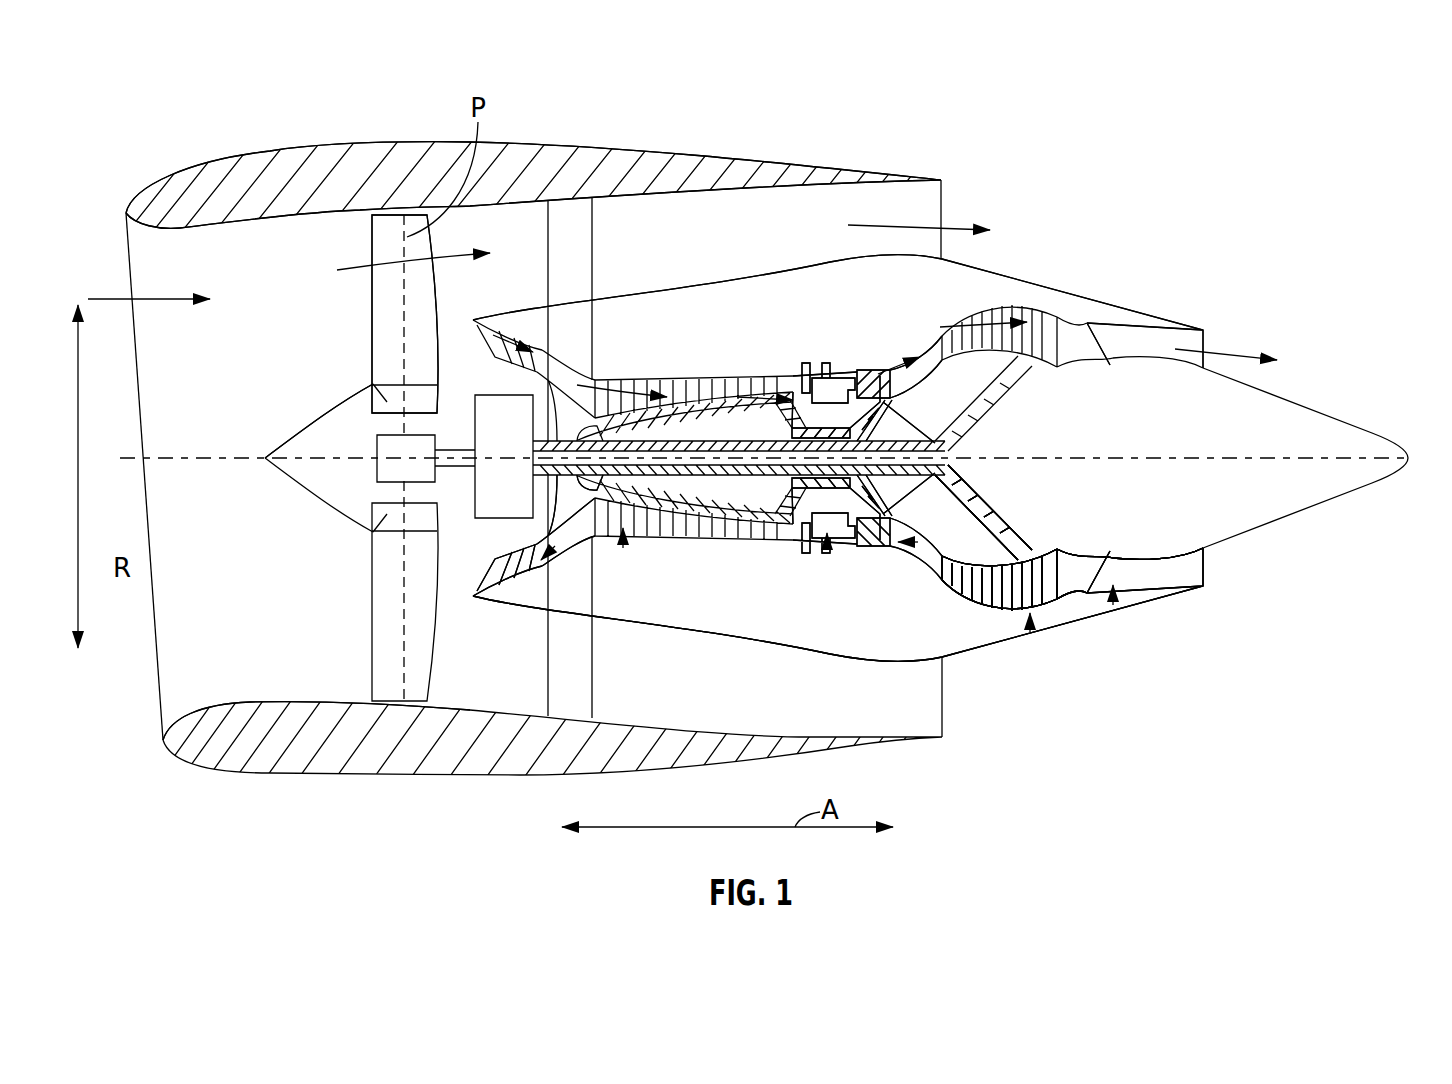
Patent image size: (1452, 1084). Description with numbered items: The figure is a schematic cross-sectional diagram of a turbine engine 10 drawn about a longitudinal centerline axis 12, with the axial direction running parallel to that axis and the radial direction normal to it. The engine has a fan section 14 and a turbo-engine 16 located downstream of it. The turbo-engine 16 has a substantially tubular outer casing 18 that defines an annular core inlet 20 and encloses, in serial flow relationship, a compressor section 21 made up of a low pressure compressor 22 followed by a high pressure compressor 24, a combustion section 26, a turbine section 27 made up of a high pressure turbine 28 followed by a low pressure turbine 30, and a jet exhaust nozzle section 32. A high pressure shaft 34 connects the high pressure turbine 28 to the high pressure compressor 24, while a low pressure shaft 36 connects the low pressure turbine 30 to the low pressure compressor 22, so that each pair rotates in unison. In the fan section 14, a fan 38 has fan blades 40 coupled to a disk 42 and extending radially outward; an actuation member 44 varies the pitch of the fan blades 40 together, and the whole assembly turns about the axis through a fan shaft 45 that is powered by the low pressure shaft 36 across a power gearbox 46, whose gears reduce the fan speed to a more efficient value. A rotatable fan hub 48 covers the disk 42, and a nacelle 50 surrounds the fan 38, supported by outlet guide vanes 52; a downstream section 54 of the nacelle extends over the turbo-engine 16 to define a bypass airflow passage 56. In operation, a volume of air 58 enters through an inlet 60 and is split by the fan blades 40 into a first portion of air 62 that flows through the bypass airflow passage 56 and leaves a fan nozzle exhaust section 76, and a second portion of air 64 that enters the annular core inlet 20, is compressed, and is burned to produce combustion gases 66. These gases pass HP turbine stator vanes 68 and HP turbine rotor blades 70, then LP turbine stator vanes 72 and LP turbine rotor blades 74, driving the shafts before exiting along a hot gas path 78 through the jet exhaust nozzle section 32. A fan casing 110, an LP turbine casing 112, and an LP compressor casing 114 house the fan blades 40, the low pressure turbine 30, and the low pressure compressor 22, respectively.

The turbine engine 10 is at (1128, 142).
The longitudinal centerline axis 12 is at (1207, 455).
The fan section 14 is at (343, 233).
The turbo-engine 16 is at (820, 292).
The outer casing 18 is at (770, 650).
The annular core inlet 20 is at (487, 585).
The compressor section 21 is at (680, 322).
The low pressure compressor 22 is at (513, 532).
The high pressure compressor 24 is at (623, 537).
The combustion section 26 is at (818, 540).
The turbine section 27 is at (928, 305).
The high pressure turbine 28 is at (945, 535).
The low pressure turbine 30 is at (1030, 622).
The jet exhaust nozzle section 32 is at (1110, 590).
The high pressure shaft 34 is at (800, 405).
The low pressure shaft 36 is at (913, 441).
The fan 38 is at (316, 523).
The fan blades 40 is at (370, 606).
The disk 42 is at (372, 385).
The actuation member 44 is at (377, 466).
The fan shaft 45 is at (445, 448).
The power gearbox 46 is at (490, 395).
The rotatable fan hub 48 is at (296, 490).
The nacelle 50 is at (392, 778).
The outlet guide vanes 52 is at (594, 270).
The downstream section of the nacelle 54 is at (832, 165).
The bypass airflow passage 56 is at (712, 244).
The volume of air 58 is at (177, 298).
The inlet 60 is at (157, 668).
The first portion of the air 62 is at (348, 278).
The second portion of the air 64 is at (480, 324).
The combustion gases 66 is at (865, 372).
The HP turbine stator vanes 68 is at (877, 547).
The HP turbine rotor blades 70 is at (892, 517).
The LP turbine stator vanes 72 is at (947, 578).
The LP turbine rotor blades 74 is at (960, 584).
The fan nozzle exhaust section 76 is at (932, 212).
The hot gas path 78 is at (925, 355).
The fan casing 110 is at (282, 702).
The LP turbine casing 112 is at (1015, 617).
The LP compressor casing 114 is at (527, 584).